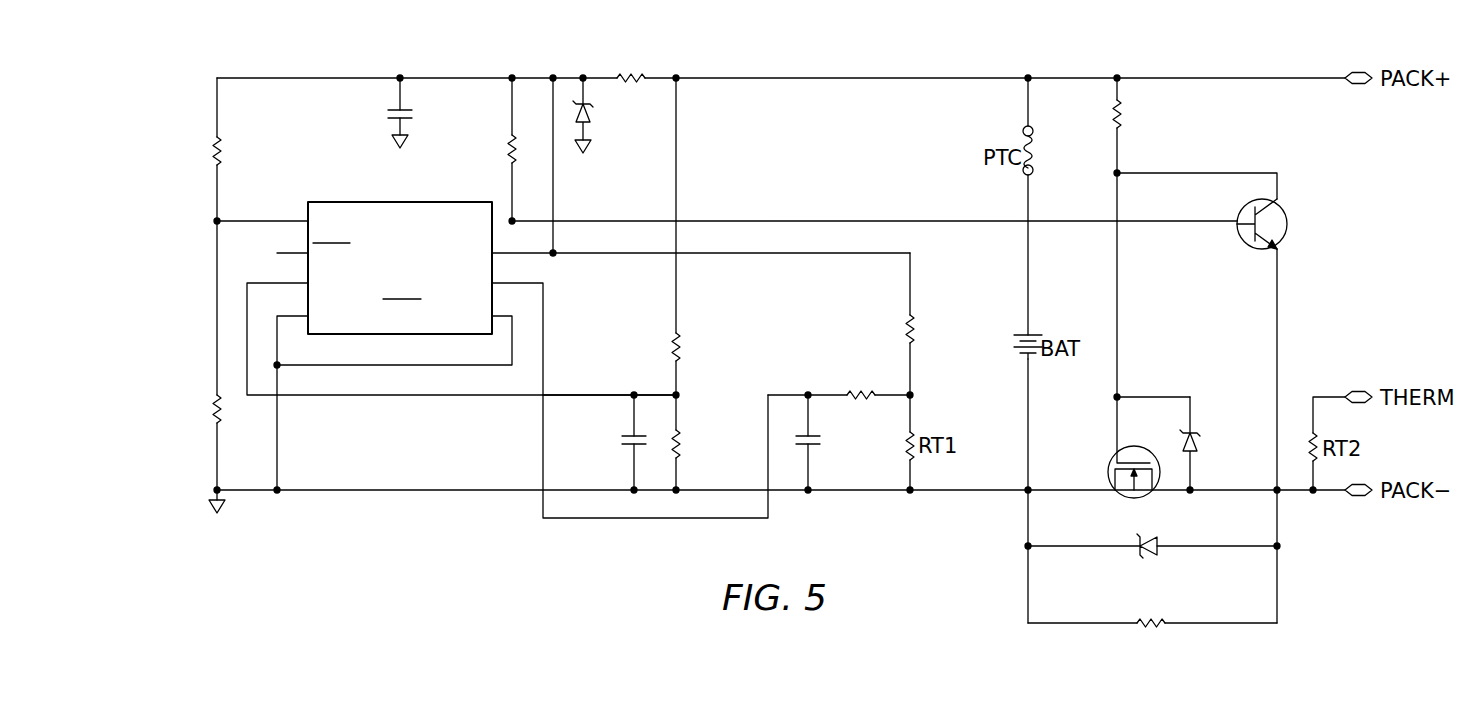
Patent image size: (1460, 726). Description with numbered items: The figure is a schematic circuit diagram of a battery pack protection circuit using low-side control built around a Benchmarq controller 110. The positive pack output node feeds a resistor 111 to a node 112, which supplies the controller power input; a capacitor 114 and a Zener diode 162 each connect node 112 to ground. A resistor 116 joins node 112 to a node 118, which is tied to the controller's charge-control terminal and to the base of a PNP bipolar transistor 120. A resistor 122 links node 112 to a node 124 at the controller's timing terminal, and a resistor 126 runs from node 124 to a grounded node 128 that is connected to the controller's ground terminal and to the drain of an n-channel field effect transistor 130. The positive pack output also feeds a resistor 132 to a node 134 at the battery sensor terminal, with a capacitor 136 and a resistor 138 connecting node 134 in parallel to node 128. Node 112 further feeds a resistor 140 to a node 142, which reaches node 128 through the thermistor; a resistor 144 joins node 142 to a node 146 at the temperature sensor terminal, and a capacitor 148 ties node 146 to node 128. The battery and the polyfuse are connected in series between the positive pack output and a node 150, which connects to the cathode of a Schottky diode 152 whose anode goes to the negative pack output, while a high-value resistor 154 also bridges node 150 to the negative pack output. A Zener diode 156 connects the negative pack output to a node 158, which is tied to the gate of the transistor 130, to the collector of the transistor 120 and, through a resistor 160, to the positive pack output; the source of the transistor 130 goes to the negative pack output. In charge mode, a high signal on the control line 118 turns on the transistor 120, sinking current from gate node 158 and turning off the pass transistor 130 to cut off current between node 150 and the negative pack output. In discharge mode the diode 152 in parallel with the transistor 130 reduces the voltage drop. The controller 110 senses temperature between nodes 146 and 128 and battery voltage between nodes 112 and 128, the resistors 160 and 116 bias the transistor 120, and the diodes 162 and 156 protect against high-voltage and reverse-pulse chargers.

The controller 110 is at (400, 268).
The resistor 111 is at (628, 75).
The node 112 is at (553, 75).
The capacitor 114 is at (393, 118).
The resistor 116 is at (507, 145).
The node 118 is at (612, 222).
The PNP bipolar transistor 120 is at (1287, 222).
The resistor 122 is at (212, 145).
The node 124 is at (215, 221).
The resistor 126 is at (212, 400).
The grounded node 128 is at (276, 495).
The n-channel field effect transistor 130 is at (1108, 469).
The resistor 132 is at (682, 345).
The node 134 is at (582, 393).
The capacitor 136 is at (620, 440).
The resistor 138 is at (682, 447).
The resistor 140 is at (914, 330).
The node 142 is at (913, 395).
The resistor 144 is at (853, 392).
The node 146 is at (669, 520).
The capacitor 148 is at (814, 440).
The node 150 is at (1024, 546).
The Schottky diode 152 is at (1146, 552).
The high-value resistor 154 is at (1149, 630).
The Zener diode 156 is at (1197, 445).
The node 158 is at (1120, 397).
The resistor 160 is at (1122, 125).
The Zener diode 162 is at (592, 111).